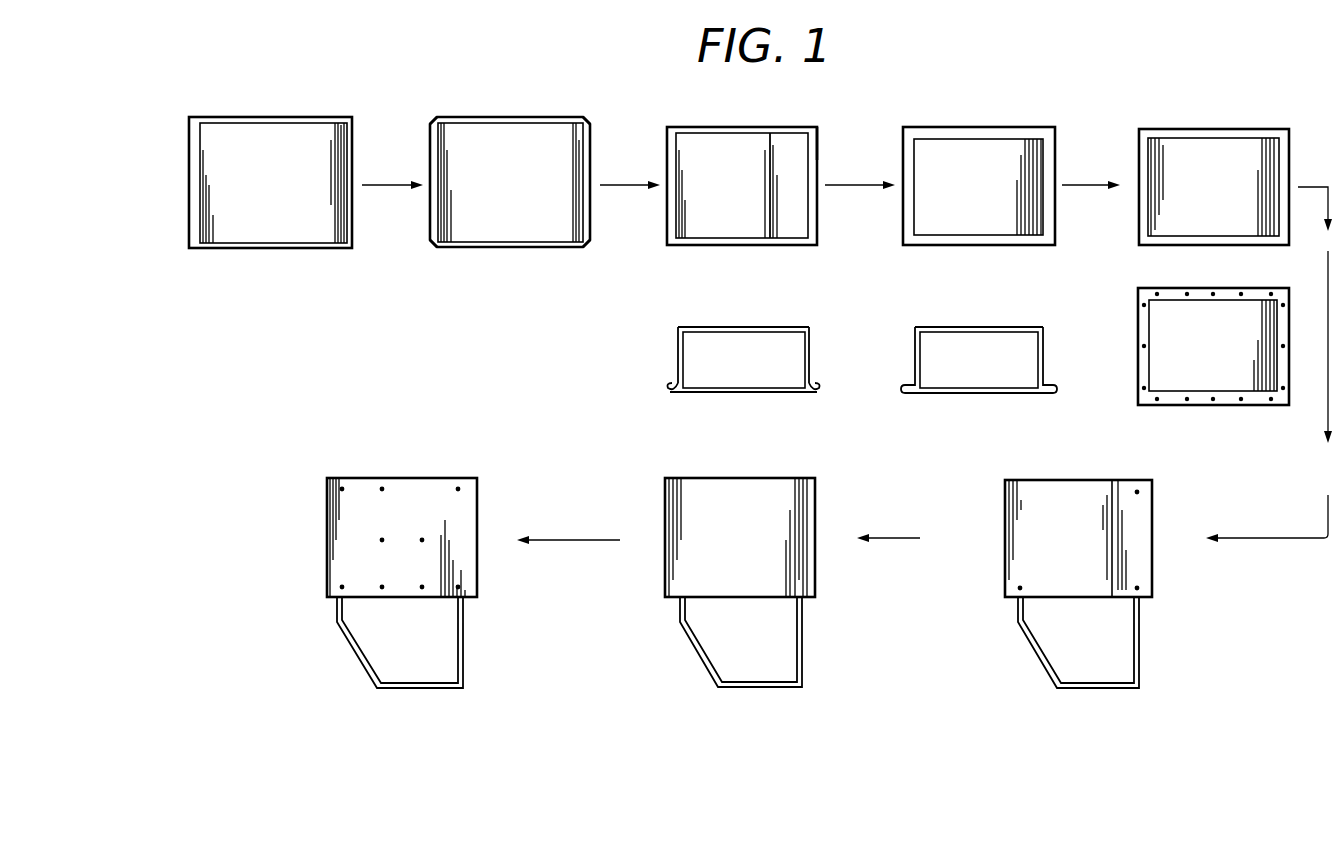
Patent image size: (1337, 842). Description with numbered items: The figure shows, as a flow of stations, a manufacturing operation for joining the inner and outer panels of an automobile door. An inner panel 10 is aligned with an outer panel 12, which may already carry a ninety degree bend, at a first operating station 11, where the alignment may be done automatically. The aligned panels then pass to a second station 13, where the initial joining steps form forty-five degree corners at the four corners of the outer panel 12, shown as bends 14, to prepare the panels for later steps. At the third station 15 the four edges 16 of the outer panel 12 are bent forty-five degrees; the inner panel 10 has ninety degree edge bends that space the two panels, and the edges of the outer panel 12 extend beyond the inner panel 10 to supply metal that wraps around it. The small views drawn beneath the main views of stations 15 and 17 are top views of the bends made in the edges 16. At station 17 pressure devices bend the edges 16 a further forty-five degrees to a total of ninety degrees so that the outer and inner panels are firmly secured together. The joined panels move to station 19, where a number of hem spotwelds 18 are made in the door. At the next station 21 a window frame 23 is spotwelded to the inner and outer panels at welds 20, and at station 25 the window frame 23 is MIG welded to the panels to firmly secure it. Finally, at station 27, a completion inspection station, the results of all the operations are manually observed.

The inner panel 10 is at (338, 248).
The first operating station 11 is at (287, 305).
The outer panel 12 is at (200, 248).
The second station 13 is at (513, 217).
The bends 14 is at (437, 117).
The third station 15 is at (769, 182).
The edges 16 is at (818, 140).
The station 17 is at (1069, 225).
The hem spotwelds 18 is at (1283, 346).
The station 19 is at (1203, 291).
The welds 20 is at (1135, 588).
The station 21 is at (1073, 611).
The window frame 23 is at (1143, 665).
The station 25 is at (825, 638).
The station 27 is at (481, 621).